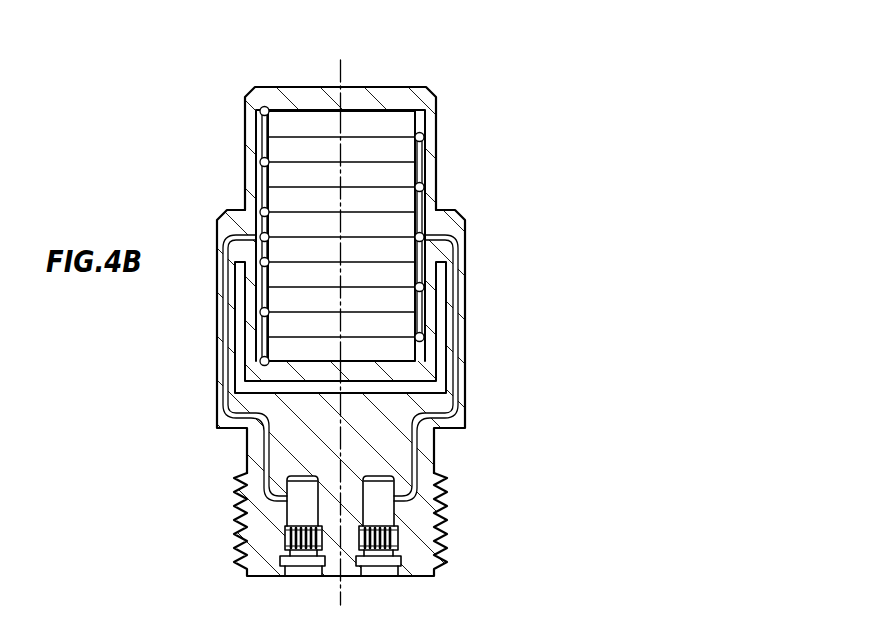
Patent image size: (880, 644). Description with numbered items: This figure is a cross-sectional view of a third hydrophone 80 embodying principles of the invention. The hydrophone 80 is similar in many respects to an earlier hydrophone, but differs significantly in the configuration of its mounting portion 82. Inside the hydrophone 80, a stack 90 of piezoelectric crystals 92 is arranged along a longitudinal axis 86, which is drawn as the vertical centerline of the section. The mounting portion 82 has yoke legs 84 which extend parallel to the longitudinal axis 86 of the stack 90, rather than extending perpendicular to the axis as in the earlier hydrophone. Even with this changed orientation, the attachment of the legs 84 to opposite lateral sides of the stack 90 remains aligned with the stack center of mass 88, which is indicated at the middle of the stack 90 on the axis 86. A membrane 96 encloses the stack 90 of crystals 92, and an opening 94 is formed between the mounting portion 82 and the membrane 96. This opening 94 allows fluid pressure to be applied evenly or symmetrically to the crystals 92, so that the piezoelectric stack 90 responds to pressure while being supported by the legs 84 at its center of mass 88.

The hydrophone 80 is at (575, 118).
The mounting portion 82 is at (437, 447).
The yoke legs 84 is at (217, 318).
The longitudinal axis 86 is at (340, 73).
The stack center of mass 88 is at (342, 236).
The stack 90 is at (395, 108).
The piezoelectric crystals 92 is at (258, 190).
The opening 94 is at (418, 396).
The membrane 96 is at (245, 133).